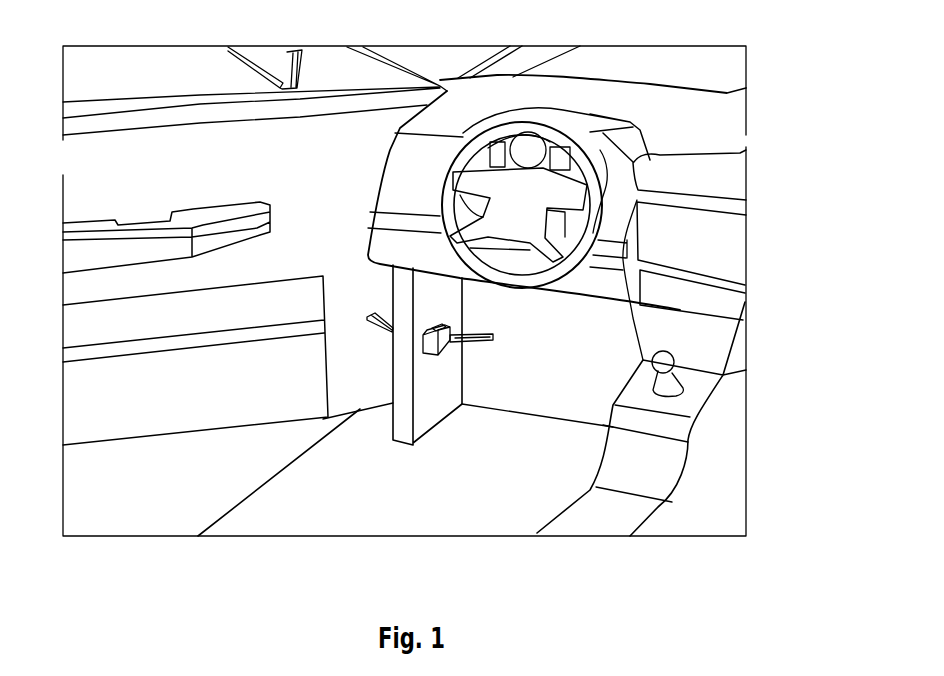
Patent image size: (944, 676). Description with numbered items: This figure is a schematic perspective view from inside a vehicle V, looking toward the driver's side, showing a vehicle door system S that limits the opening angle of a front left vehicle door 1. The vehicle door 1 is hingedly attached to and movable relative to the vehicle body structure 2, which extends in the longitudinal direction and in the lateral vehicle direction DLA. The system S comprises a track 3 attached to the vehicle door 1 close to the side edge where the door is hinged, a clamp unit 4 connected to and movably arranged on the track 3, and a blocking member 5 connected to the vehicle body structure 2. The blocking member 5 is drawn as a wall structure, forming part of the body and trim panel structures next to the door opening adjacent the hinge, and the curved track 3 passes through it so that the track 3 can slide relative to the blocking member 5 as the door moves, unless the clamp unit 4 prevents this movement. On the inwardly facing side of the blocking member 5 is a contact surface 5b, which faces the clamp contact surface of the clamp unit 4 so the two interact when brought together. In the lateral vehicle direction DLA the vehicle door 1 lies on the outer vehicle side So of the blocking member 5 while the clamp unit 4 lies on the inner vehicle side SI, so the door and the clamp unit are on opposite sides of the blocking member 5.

The vehicle door 1 is at (113, 182).
The vehicle body structure 2 is at (307, 500).
The track 3 is at (487, 345).
The clamp unit 4 is at (425, 358).
The blocking member 5 is at (440, 387).
The contact surface 5b is at (420, 323).
The vehicle V is at (707, 128).
The vehicle door system S is at (458, 421).
The inner vehicle side SI is at (494, 322).
The outer vehicle side So is at (357, 364).
The lateral vehicle direction DLA is at (178, 488).